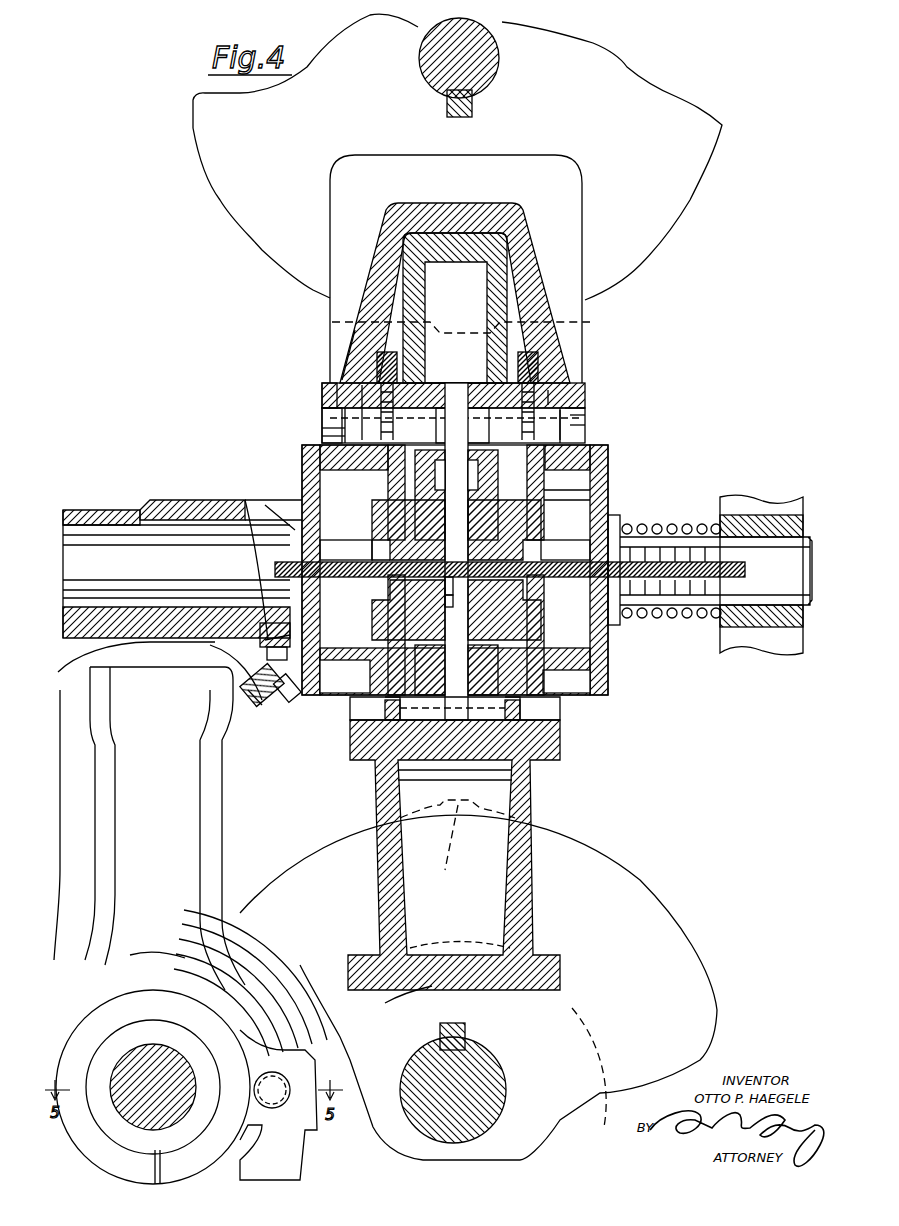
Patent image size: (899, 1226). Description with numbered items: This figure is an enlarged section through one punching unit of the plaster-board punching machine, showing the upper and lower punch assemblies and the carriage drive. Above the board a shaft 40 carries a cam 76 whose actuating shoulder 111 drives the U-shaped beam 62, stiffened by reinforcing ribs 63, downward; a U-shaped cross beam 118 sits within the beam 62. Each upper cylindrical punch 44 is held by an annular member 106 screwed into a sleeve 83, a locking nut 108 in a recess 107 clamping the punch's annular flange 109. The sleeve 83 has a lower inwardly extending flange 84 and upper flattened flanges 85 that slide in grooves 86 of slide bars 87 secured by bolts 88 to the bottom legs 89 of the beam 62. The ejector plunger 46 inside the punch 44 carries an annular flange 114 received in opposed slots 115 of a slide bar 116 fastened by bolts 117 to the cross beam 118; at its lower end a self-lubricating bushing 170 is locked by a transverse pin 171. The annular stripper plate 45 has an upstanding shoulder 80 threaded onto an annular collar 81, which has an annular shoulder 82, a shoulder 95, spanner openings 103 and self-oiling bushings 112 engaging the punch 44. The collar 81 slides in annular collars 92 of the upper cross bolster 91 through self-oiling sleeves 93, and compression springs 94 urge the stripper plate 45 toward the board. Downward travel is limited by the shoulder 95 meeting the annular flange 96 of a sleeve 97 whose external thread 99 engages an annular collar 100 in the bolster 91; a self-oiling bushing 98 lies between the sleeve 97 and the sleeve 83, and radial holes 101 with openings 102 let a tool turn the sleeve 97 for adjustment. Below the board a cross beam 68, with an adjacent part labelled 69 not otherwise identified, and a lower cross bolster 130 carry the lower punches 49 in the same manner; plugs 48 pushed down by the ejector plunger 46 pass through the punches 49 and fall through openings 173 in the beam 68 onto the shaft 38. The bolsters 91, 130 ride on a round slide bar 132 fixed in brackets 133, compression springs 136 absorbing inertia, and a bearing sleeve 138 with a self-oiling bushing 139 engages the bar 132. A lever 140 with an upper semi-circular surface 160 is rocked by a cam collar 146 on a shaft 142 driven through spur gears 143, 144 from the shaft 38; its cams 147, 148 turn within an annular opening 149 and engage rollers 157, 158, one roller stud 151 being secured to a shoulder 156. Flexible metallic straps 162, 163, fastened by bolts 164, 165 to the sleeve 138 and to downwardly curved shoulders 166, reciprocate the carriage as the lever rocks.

The shaft 38 is at (480, 1078).
The shaft 40 is at (485, 57).
The upper cylindrical punches 44 is at (372, 548).
The annular stripper plates 45 is at (520, 552).
The ejector plungers 46 is at (456, 551).
The plugs 48 is at (570, 575).
The lower punches 49 is at (466, 635).
The U-shaped beam 62 is at (505, 210).
The reinforcing ribs 63 is at (366, 165).
The cross beam 68 is at (385, 893).
The cylinder bottom edge 69 is at (390, 1004).
The cam 76 is at (193, 128).
The annular upstanding shoulder 80 is at (620, 520).
The annular collar 81 is at (620, 525).
The annular shoulder 82 is at (302, 468).
The sleeve 83 is at (388, 470).
The annular inwardly extending flange 84 is at (302, 487).
The flattened outstanding flange 85 is at (322, 428).
The grooves 86 is at (325, 420).
The slide bars 87 is at (322, 436).
The bolts 88 is at (325, 390).
The bottom legs 89 is at (585, 395).
The upper cross bolster 91 is at (545, 480).
The annular collars 92 is at (580, 505).
The self-oiling sleeves 93 is at (395, 540).
The compression springs 94 is at (525, 610).
The shoulder 95 is at (560, 492).
The inwardly extending annular flange 96 is at (375, 520).
The sleeve 97 is at (586, 432).
The self-oiling bushing 98 is at (322, 455).
The external thread 99 is at (585, 430).
The annular collar 100 is at (590, 447).
The radial holes 101 is at (587, 413).
The openings 102 is at (587, 423).
The openings 103 is at (575, 408).
The annular member 106 is at (562, 412).
The recess 107 is at (350, 350).
The locking nut 108 is at (550, 392).
The annular flange 109 is at (560, 345).
The actuating shoulders 111 is at (556, 290).
The self-oiling bushings 112 is at (456, 495).
The annular flange 114 is at (452, 408).
The opposed slots 115 is at (380, 385).
The slide bar 116 is at (478, 408).
The bolts 117 is at (362, 385).
The U-shaped cross beam 118 is at (497, 282).
The cross bolster 130 is at (608, 660).
The round slide bar 132 is at (795, 590).
The brackets 133 is at (795, 510).
The compression springs 136 is at (705, 620).
The bearing sleeve 138 is at (170, 500).
The self-oiling bushing 139 is at (105, 510).
The lever 140 is at (178, 840).
The shaft 142 is at (170, 1050).
The spur gear 143 is at (158, 960).
The spur gear 144 is at (590, 1030).
The cam collar 146 is at (240, 950).
The cam 147 is at (100, 1160).
The cam 148 is at (290, 1155).
The annular opening 149 is at (212, 950).
The roller stud 151 is at (300, 1030).
The shoulder 156 is at (275, 1120).
The roller 157 is at (133, 955).
The roller 158 is at (275, 1070).
The upper semi-circular surface 160 is at (250, 720).
The flexible metallic strap 162 is at (250, 700).
The flexible metallic straps 163 is at (250, 640).
The bolts 164 is at (287, 703).
The bolts 165 is at (288, 660).
The downwardly curved shoulders 166 is at (260, 705).
The self-lubricating bushing 170 is at (455, 605).
The transverse pin 171 is at (458, 588).
The openings 173 is at (480, 885).